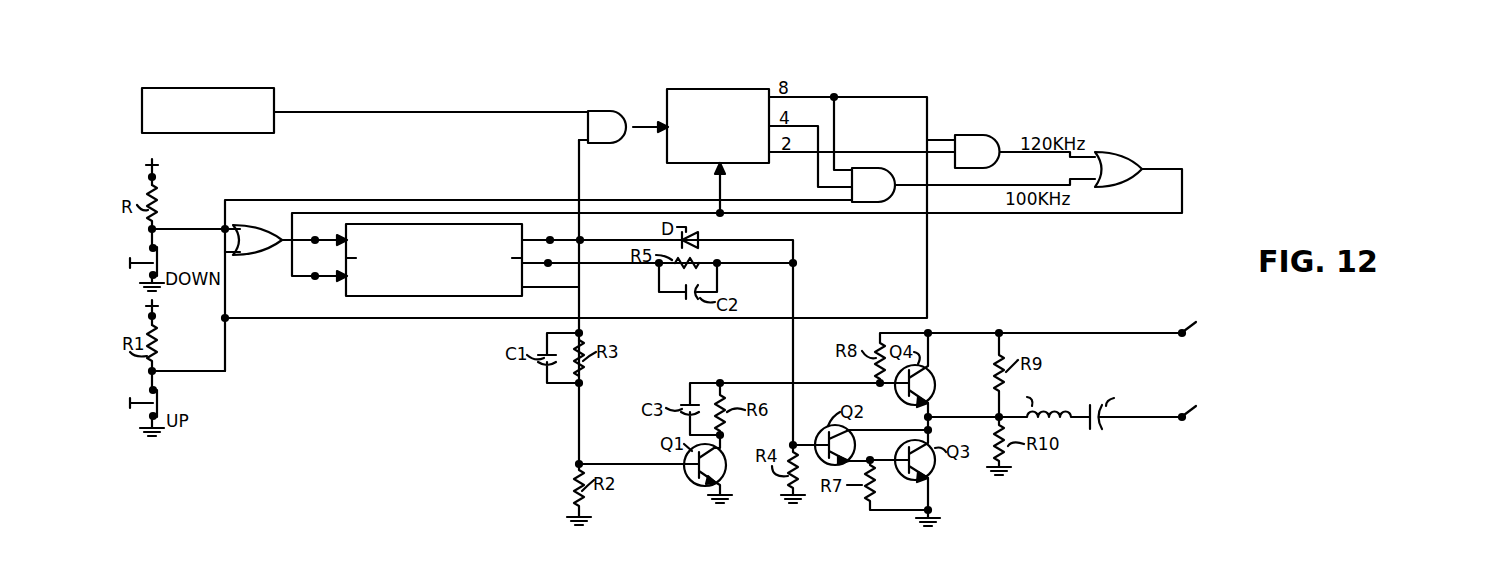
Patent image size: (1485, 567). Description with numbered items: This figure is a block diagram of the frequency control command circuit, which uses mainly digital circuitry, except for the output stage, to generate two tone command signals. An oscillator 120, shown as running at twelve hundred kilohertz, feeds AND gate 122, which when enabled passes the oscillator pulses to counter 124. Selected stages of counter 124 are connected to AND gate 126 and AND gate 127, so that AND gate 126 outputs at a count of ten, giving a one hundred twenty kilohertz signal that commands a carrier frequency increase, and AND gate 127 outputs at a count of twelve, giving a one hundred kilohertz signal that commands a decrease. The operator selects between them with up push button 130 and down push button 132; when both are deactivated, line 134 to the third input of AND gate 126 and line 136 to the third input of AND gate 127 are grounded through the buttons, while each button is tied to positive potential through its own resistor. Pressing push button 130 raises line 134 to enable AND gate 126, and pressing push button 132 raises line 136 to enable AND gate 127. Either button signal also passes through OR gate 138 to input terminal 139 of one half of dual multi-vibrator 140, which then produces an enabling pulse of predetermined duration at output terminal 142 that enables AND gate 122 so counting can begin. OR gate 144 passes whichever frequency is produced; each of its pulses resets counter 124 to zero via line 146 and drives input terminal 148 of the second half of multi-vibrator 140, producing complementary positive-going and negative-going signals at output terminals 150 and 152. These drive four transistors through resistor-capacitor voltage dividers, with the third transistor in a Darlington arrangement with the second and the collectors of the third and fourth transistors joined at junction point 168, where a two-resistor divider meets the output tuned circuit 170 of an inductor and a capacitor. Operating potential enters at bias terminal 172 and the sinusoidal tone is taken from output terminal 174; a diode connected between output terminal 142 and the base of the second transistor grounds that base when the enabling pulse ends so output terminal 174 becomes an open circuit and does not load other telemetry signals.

The oscillator 120 is at (275, 99).
The AND gate 122 is at (610, 146).
The counter 124 is at (666, 96).
The AND gate 126 is at (972, 138).
The AND gate 127 is at (887, 181).
The up push button 130 is at (150, 397).
The down push button 132 is at (150, 256).
The line 134 is at (208, 371).
The line 136 is at (207, 226).
The OR gate 138 is at (262, 258).
The input terminal 139 is at (318, 243).
The dual multi-vibrator 140 is at (457, 291).
The output terminal 142 is at (561, 235).
The OR gate 144 is at (1128, 163).
The line 146 is at (723, 176).
The input terminal 148 is at (318, 279).
The output terminal 150 is at (557, 291).
The output terminal 152 is at (550, 266).
The junction point 168 is at (933, 416).
The output tuned circuit 170 is at (1090, 402).
The bias terminal 172 is at (1207, 331).
The output terminal 174 is at (1207, 416).